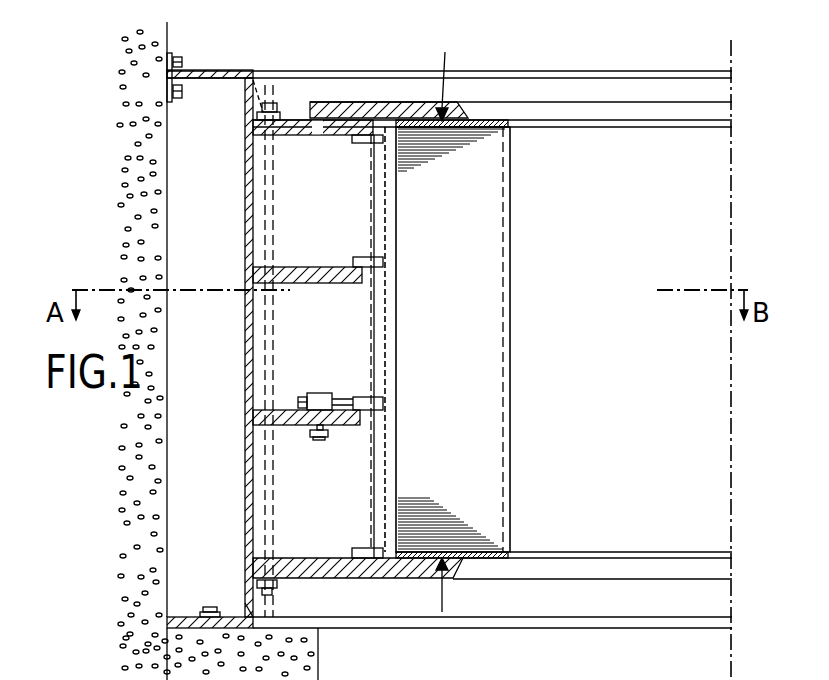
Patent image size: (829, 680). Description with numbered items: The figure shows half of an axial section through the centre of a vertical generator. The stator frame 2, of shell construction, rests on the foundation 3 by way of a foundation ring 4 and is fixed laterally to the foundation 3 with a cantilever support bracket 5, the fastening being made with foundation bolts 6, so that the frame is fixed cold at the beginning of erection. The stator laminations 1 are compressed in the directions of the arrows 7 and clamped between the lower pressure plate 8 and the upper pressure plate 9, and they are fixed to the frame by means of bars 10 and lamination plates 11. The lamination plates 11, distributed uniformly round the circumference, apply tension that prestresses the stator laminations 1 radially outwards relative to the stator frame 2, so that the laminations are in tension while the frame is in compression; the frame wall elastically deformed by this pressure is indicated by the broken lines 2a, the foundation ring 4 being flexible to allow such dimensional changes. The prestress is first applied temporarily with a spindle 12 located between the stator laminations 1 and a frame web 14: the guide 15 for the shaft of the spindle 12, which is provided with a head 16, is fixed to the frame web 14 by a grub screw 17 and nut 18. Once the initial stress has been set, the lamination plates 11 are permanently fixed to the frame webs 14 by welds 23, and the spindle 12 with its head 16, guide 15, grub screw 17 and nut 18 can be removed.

The stator laminations 1 is at (489, 463).
The stator frame 2 is at (250, 343).
The elastically deformed frame wall 2a is at (272, 498).
The foundation 3 is at (144, 159).
The foundation ring 4 is at (247, 610).
The cantilever support bracket 5 is at (218, 72).
The foundation bolts 6 is at (180, 63).
The arrows 7 is at (455, 596).
The lower pressure plate 8 is at (313, 578).
The upper pressure plate 9 is at (338, 112).
The bars 10 is at (388, 212).
The lamination plates 11 is at (379, 262).
The spindle 12 is at (341, 400).
The frame web 14 is at (276, 268).
The guide 15 is at (320, 401).
The head 16 is at (300, 404).
The grub screw 17 is at (318, 433).
The nut 18 is at (328, 433).
The welds 23 is at (346, 146).